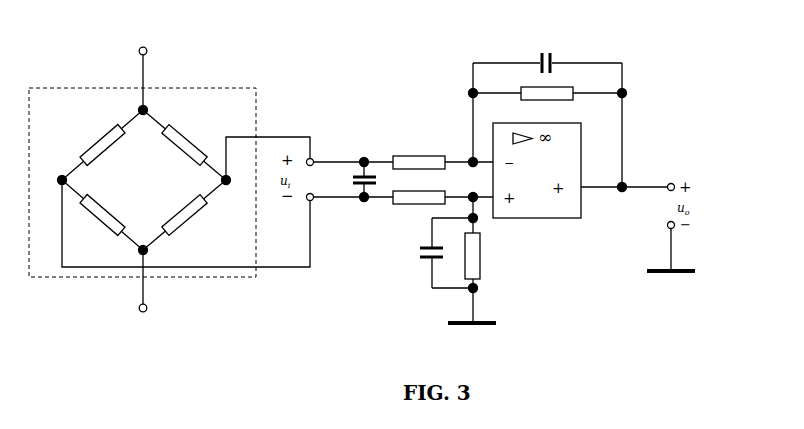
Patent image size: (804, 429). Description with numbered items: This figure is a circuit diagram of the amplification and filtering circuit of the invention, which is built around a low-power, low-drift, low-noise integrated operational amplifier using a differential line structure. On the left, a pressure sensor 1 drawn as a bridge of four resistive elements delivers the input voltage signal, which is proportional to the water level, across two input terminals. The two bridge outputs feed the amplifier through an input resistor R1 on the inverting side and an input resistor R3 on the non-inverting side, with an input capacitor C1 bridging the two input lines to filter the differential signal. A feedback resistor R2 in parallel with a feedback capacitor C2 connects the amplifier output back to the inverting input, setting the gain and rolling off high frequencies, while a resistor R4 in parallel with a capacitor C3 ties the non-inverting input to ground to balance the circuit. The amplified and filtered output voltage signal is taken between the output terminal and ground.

The bridge sensor (Wheatstone bridge strain gauge) 1 is at (228, 87).
The input resistor R1 is at (403, 153).
The feedback resistor R2 is at (548, 84).
The input resistor R3 is at (403, 206).
The resistor R4 to ground R4 is at (474, 260).
The input capacitor C1 is at (352, 179).
The feedback capacitor C2 is at (547, 54).
The capacitor C3 to ground C3 is at (431, 253).